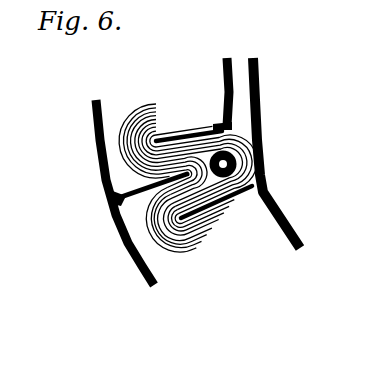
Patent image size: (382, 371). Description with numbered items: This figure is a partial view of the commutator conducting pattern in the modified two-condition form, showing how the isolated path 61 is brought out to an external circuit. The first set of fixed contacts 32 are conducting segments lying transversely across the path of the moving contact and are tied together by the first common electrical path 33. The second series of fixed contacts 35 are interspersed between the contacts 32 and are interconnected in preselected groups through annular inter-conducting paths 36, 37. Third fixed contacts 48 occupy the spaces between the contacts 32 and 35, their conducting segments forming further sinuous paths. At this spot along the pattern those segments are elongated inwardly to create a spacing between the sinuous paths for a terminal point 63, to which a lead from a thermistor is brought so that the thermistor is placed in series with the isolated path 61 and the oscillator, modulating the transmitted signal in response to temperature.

The first set of spaced, fixed contacts 32 is at (133, 199).
The first common electrical path 33 is at (101, 190).
The second series of spaced, fixed electrical contacts 35 is at (170, 139).
The annular inter-conducting path 36 is at (257, 115).
The annular inter-conducting path 37 is at (228, 88).
The third fixed contacts 48 is at (184, 254).
The isolated path 61 is at (198, 150).
The terminal point 63 is at (223, 164).